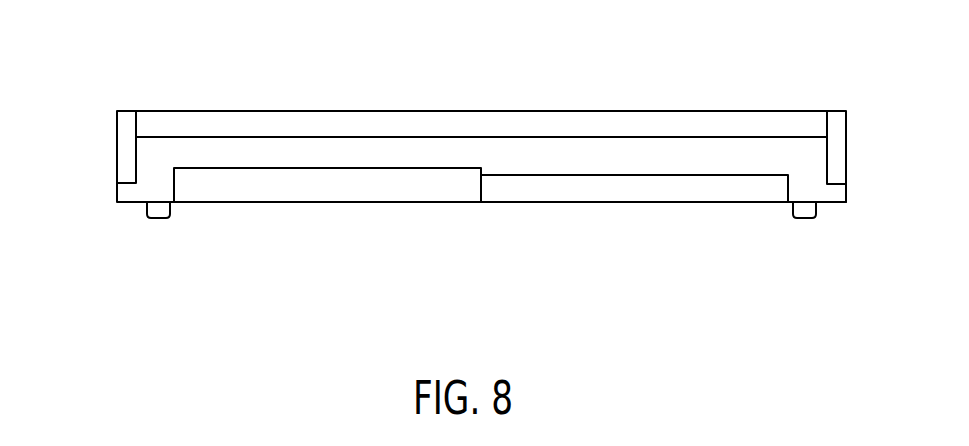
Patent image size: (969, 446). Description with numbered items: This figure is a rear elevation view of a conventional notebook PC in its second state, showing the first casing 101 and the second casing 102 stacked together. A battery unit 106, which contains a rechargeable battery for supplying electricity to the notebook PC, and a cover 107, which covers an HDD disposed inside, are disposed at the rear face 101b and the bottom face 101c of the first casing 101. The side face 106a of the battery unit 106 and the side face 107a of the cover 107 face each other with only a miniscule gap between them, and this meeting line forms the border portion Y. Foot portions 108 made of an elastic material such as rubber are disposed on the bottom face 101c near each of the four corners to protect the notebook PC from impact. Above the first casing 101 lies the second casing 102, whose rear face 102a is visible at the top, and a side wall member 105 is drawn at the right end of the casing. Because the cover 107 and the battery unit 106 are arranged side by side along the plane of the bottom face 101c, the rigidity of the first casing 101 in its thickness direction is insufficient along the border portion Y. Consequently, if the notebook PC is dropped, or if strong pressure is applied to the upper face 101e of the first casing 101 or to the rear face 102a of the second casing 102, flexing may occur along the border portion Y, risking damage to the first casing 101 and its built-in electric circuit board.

The first casing 101 is at (797, 156).
The rear face 101b is at (153, 162).
The bottom face 101c is at (846, 210).
The upper face 101e is at (503, 124).
The second casing 102 is at (763, 127).
The rear face 102a is at (579, 99).
The right side wall member 105 is at (838, 123).
The battery unit 106 is at (272, 183).
The side face 106a is at (493, 192).
The cover 107 is at (642, 185).
The side face 107a is at (469, 188).
The foot portions 108 is at (158, 218).
The border portion Y is at (487, 216).